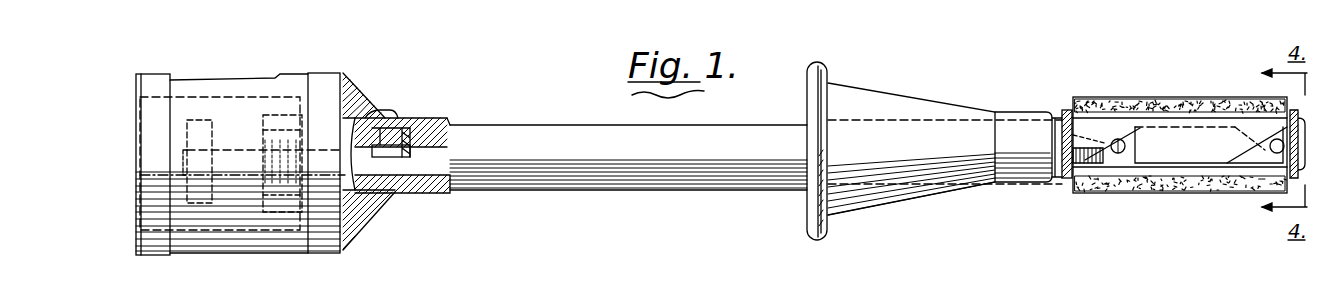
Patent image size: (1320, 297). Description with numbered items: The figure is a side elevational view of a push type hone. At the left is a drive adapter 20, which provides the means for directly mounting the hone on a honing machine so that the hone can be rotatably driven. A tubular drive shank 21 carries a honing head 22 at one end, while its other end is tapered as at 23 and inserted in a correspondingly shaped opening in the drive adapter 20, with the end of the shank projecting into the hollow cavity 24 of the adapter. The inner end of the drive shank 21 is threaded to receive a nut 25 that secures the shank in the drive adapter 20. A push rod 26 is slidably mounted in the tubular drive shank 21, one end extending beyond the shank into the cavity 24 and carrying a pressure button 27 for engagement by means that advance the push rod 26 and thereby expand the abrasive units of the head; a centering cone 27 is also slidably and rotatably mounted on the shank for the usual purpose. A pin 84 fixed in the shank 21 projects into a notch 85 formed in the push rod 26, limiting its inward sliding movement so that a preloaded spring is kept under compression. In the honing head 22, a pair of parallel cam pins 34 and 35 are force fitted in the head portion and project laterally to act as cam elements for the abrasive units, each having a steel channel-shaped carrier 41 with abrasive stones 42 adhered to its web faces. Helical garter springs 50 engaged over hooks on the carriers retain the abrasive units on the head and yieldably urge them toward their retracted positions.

The drive adapter 20 is at (275, 254).
The tubular drive shank 21 is at (580, 172).
The honing head 22 is at (1195, 197).
The tapered end 23 is at (375, 192).
The cavity 24 is at (222, 253).
The nut 25 is at (292, 247).
The push rod 26 is at (233, 170).
The pressure button 27 is at (198, 127).
The cam pin 34 is at (1266, 137).
The cam pin 35 is at (1126, 146).
The carrier 41 is at (1190, 140).
The abrasive elements 42 is at (1165, 105).
The helical garter spring 50 is at (1068, 112).
The pin 84 is at (400, 128).
The notch 85 is at (376, 120).